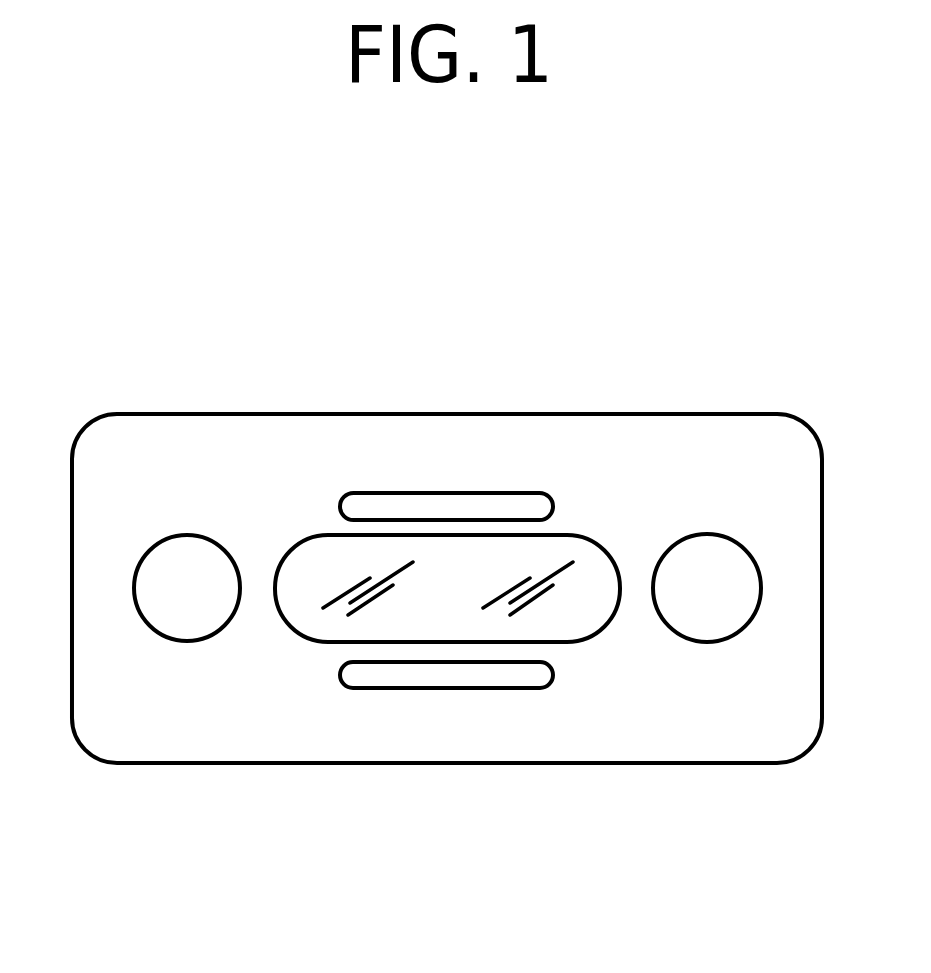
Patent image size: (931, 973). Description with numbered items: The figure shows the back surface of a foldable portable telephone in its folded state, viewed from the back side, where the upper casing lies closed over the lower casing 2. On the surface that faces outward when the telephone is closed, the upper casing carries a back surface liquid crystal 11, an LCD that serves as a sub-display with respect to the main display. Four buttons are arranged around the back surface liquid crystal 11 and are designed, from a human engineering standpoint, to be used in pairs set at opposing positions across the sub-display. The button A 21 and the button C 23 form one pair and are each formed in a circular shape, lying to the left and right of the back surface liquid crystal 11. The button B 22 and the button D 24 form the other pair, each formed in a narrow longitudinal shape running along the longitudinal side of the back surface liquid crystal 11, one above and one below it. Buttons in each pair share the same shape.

The lower casing 2 is at (687, 742).
The back surface liquid crystal 11 is at (382, 535).
The button A 21 is at (190, 535).
The button B 22 is at (520, 493).
The button C 23 is at (708, 535).
The button D 24 is at (489, 688).